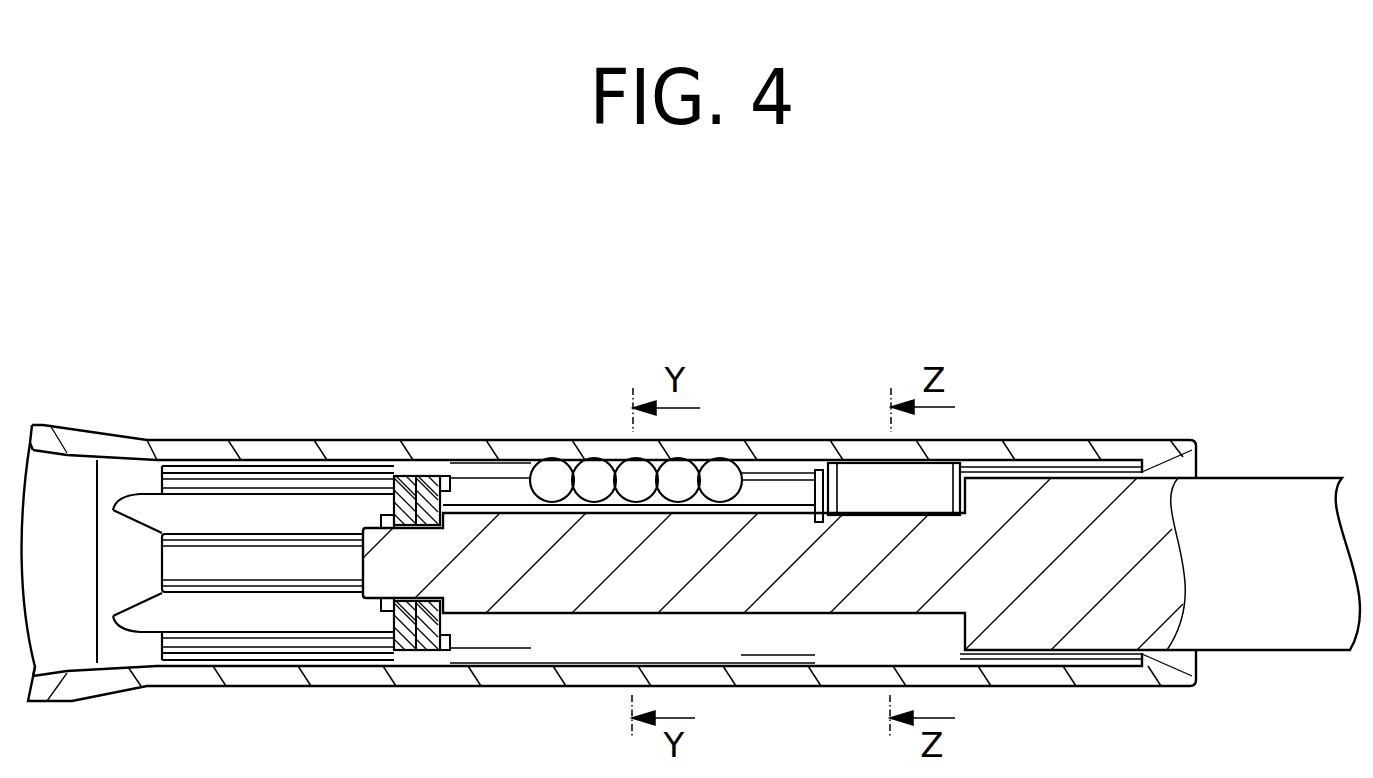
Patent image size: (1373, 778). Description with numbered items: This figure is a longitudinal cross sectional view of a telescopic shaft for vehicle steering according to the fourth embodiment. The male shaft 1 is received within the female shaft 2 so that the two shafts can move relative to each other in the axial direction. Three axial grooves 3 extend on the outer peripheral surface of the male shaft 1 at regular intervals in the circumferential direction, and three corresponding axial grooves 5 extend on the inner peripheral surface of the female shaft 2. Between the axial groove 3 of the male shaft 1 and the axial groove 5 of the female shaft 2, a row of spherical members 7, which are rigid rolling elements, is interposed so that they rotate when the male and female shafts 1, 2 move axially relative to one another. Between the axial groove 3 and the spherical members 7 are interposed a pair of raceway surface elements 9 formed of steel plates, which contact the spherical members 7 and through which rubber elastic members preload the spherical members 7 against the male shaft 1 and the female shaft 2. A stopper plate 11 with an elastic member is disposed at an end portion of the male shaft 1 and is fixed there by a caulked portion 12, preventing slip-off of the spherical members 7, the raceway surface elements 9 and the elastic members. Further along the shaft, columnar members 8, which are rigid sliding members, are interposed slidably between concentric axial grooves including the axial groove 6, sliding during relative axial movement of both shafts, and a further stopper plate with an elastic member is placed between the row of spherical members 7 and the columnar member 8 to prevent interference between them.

The male shaft 1 is at (1265, 476).
The female shaft 2 is at (1113, 442).
The axial groove 3 is at (817, 497).
The axial groove 5 is at (517, 463).
The axial groove 6 is at (1070, 462).
The spherical members 7 is at (683, 468).
The columnar members 8 is at (865, 482).
The raceway surface elements 9 is at (453, 490).
The stopper plate with elastic member 11 is at (413, 650).
The caulked portion 12 is at (386, 600).